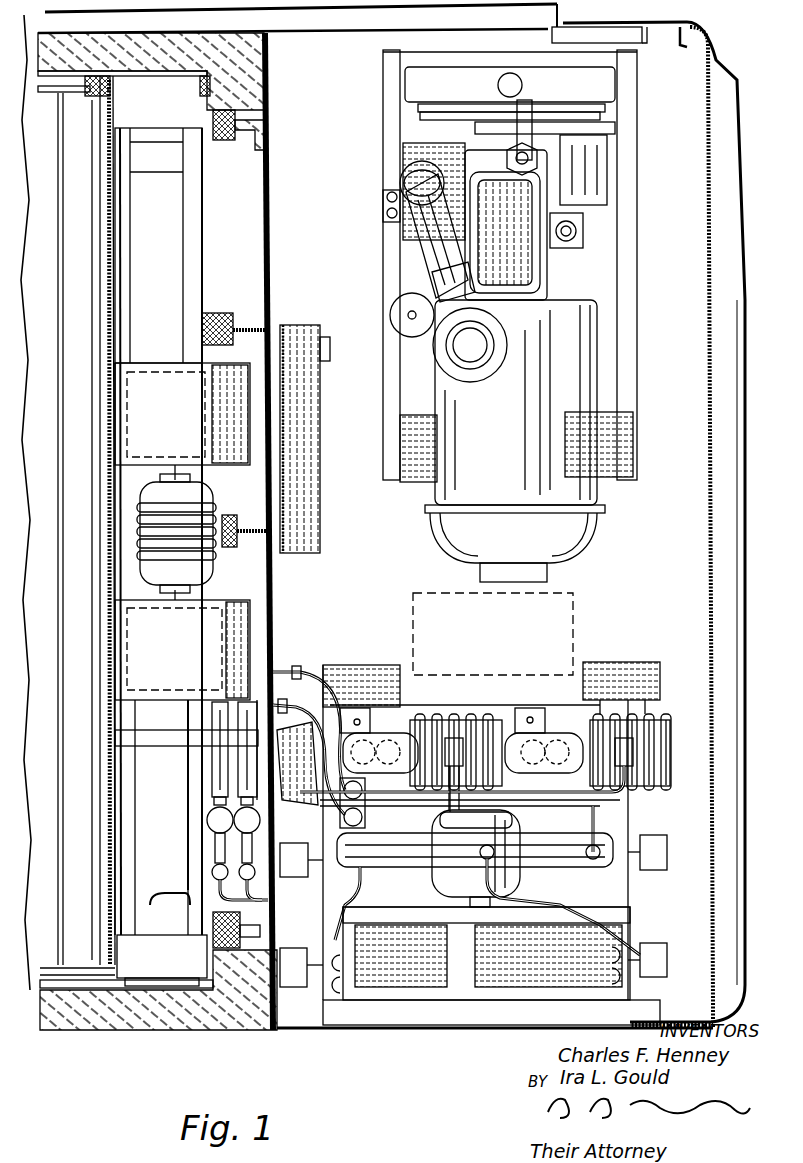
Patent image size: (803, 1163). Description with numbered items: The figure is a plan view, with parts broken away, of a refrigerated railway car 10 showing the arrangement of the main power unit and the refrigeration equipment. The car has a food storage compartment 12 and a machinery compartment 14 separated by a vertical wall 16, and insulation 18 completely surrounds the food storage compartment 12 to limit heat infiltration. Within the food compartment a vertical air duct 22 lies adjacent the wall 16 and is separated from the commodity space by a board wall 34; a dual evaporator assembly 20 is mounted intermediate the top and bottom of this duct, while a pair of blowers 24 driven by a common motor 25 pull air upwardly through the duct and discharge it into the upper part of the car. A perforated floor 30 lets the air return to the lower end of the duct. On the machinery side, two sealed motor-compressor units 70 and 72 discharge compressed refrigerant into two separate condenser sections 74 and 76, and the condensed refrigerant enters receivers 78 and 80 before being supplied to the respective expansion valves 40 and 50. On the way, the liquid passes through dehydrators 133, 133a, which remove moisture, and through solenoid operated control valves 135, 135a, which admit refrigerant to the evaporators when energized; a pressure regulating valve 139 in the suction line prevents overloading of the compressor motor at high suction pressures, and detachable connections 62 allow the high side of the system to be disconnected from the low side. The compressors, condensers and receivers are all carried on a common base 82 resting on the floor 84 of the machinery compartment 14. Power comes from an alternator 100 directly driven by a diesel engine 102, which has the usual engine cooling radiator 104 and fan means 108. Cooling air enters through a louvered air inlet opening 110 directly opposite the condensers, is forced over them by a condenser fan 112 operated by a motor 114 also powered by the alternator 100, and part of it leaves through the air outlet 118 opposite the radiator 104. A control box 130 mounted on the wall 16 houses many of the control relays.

The railway car 10 is at (722, 66).
The food storage compartment 12 is at (62, 133).
The machinery compartment 14 is at (392, 526).
The vertical wall 16 is at (270, 205).
The insulation 18 is at (55, 45).
The dual evaporator assembly 20 is at (180, 959).
The vertical air duct 22 is at (160, 207).
The blowers 24 is at (230, 445).
The common motor 25 is at (205, 567).
The perforated floor 30 is at (75, 950).
The board wall 34 is at (116, 278).
The thermostatic expansion valve 40 is at (256, 872).
The expansion valve 50 is at (212, 872).
The detachable connections 62 is at (285, 702).
The sealed motor-compressor unit 70 is at (442, 718).
The sealed motor-compressor unit 72 is at (580, 722).
The condenser section 74 is at (622, 955).
The condenser section 76 is at (335, 957).
The receiver 78 is at (380, 870).
The receiver 80 is at (570, 868).
The common base 82 is at (620, 818).
The floor 84 is at (690, 887).
The alternator 100 is at (570, 478).
The diesel engine 102 is at (530, 262).
The engine cooling radiator 104 is at (582, 87).
The fan means 108 is at (420, 117).
The louvered air inlet opening 110 is at (462, 1010).
The condenser fan 112 is at (560, 925).
The motor 114 is at (520, 824).
The air outlet 118 is at (624, 37).
The control box 130 is at (288, 340).
The dehydrator 133 is at (215, 715).
The dehydrator 133a is at (243, 760).
The solenoid operated control valve 135 is at (207, 820).
The refrigerant flow control valve 135a is at (240, 832).
The pressure regulating valve 139 is at (344, 818).